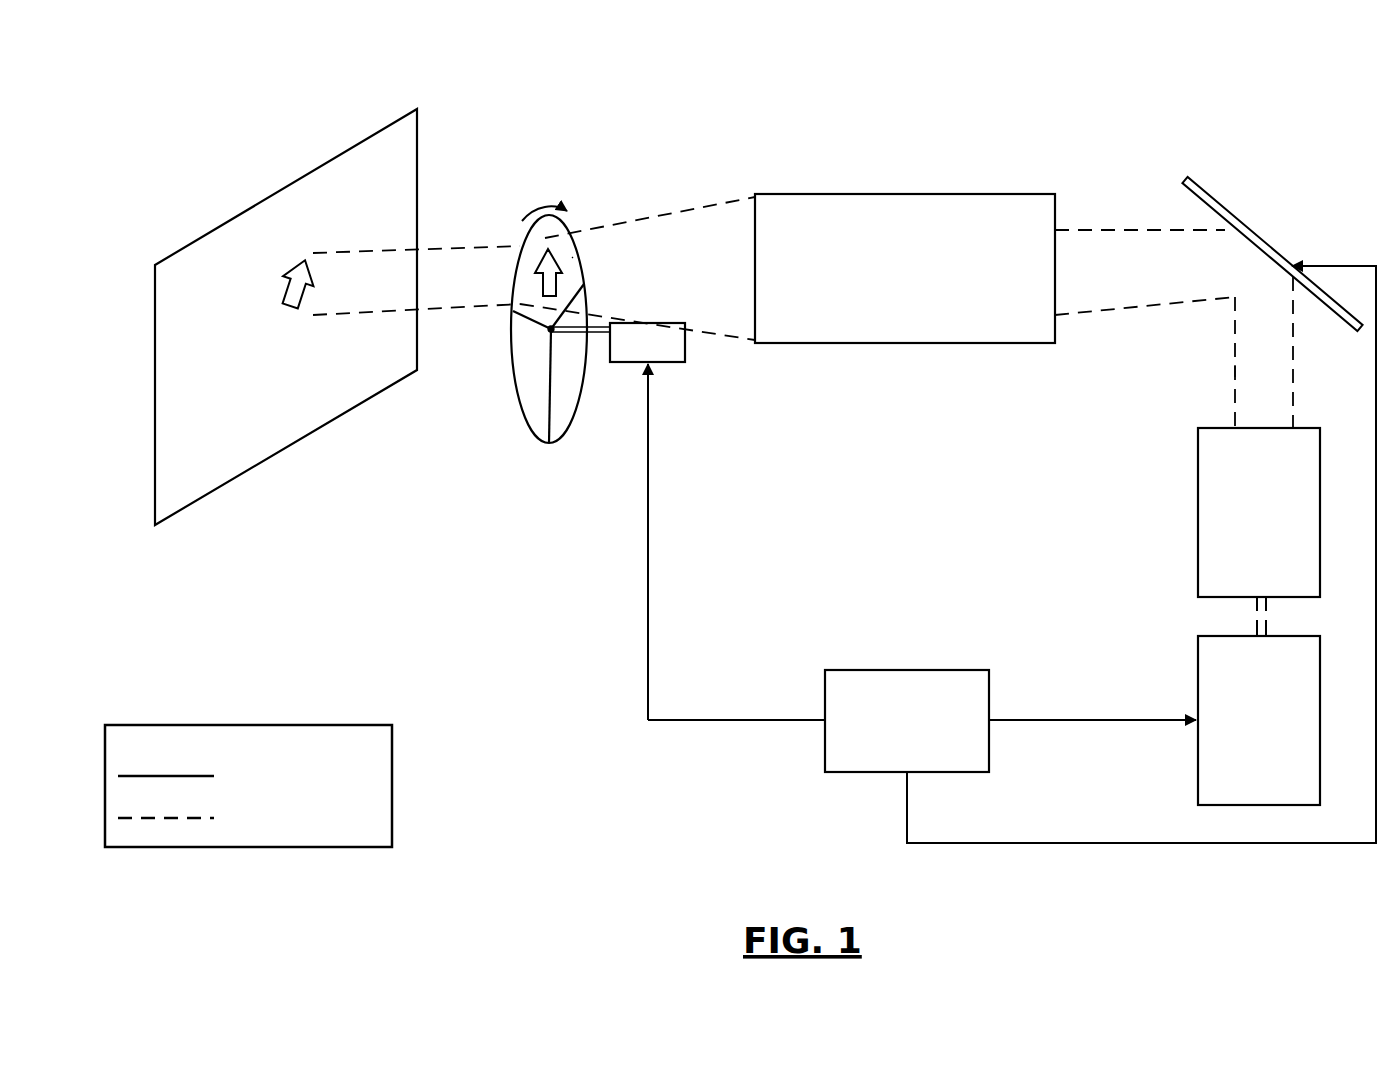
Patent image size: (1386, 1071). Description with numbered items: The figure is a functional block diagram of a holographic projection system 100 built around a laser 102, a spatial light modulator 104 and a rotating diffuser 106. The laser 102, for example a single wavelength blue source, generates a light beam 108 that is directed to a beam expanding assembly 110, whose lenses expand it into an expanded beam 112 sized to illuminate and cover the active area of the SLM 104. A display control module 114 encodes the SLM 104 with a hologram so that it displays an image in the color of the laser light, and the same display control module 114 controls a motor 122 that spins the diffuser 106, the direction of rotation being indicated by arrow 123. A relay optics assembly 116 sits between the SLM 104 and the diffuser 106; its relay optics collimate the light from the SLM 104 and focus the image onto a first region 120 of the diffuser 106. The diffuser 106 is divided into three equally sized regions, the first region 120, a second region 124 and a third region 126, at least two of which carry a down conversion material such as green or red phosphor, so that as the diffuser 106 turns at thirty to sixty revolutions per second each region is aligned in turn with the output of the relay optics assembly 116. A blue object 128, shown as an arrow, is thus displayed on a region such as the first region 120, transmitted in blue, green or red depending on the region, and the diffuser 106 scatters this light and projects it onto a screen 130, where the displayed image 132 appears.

The holographic projection system 100 is at (205, 70).
The laser 102 is at (1198, 662).
The spatial light modulator 104 is at (1273, 246).
The rotating diffuser 106 is at (528, 428).
The light beam 108 is at (1257, 617).
The beam expanding assembly 110 is at (1198, 462).
The expanded beam 112 is at (1235, 371).
The display control module 114 is at (915, 670).
The relay optics assembly 116 is at (958, 194).
The first region 120 is at (572, 257).
The motor 122 is at (685, 357).
The arrow 123 is at (547, 204).
The second region 124 is at (528, 378).
The third region 126 is at (567, 383).
The blue object 128 is at (530, 278).
The screen 130 is at (200, 233).
The displayed image 132 is at (290, 298).